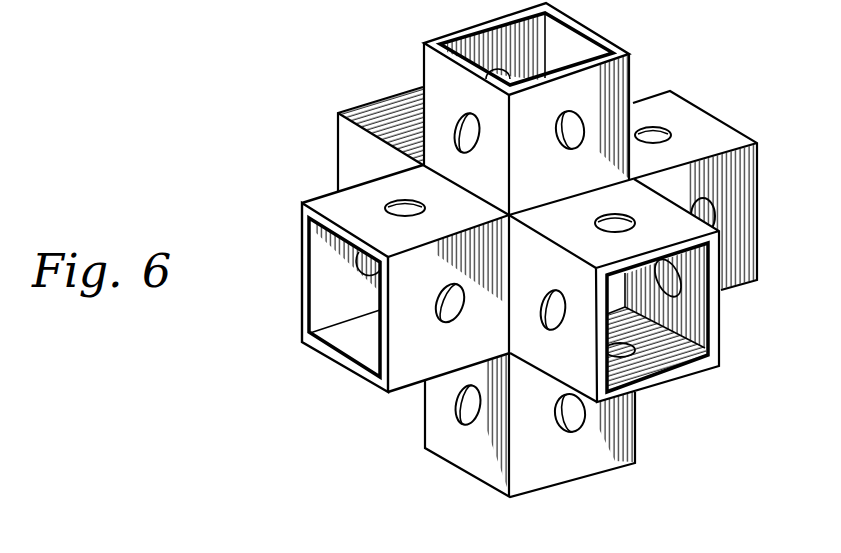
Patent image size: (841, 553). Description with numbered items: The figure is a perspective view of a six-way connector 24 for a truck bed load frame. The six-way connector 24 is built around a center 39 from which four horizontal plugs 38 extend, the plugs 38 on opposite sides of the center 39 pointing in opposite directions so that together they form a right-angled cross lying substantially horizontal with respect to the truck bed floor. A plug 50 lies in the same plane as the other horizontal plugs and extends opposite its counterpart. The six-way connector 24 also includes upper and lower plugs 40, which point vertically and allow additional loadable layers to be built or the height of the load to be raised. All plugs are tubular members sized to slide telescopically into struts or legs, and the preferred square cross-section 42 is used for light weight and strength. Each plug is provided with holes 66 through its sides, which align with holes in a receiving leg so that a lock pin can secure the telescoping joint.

The six-way connector 24 is at (266, 414).
The horizontal plug 38 is at (696, 121).
The center 39 is at (457, 183).
The upper and lower plugs 40 is at (431, 63).
The square cross-section 42 is at (585, 26).
The plug 50 is at (300, 278).
The holes 66 is at (458, 309).